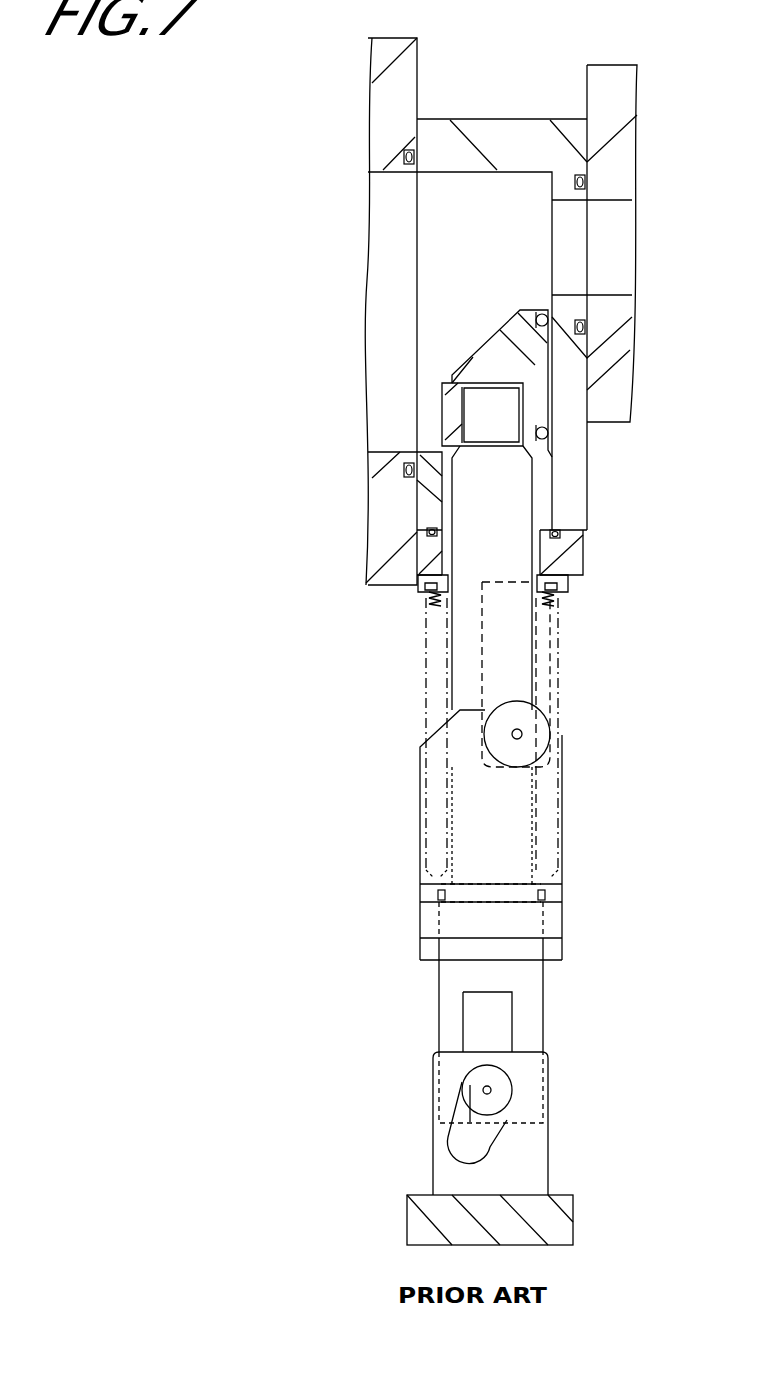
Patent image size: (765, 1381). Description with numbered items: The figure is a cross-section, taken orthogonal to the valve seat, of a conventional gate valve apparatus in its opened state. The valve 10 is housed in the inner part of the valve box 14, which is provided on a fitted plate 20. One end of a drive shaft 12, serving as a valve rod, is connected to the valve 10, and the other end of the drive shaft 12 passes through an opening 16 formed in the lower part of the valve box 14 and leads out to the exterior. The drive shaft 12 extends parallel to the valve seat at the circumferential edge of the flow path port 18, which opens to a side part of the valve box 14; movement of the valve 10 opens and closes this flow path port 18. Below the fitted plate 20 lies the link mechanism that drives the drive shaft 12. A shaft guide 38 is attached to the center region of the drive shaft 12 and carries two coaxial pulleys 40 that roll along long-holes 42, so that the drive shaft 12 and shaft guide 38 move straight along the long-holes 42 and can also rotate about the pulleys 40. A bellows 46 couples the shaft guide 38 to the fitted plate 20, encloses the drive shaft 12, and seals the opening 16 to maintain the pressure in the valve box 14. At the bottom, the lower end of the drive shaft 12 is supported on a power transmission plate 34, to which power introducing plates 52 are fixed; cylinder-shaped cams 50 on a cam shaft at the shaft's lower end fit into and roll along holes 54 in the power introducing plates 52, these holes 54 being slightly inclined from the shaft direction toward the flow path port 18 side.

The valve 10 is at (470, 367).
The drive shaft 12 is at (470, 525).
The valve box 14 is at (518, 135).
The opening 16 is at (525, 522).
The flow path port 18 is at (578, 293).
The fitted plate 20 is at (578, 557).
The power transmission plate 34 is at (561, 1223).
The shaft guide 38 is at (418, 812).
The pulley 40 is at (549, 738).
The long-hole 42 is at (553, 672).
The bellows 46 is at (427, 673).
The cam 50 is at (507, 1090).
The power introducing plate 52 is at (533, 1163).
The hole 54 is at (452, 1148).